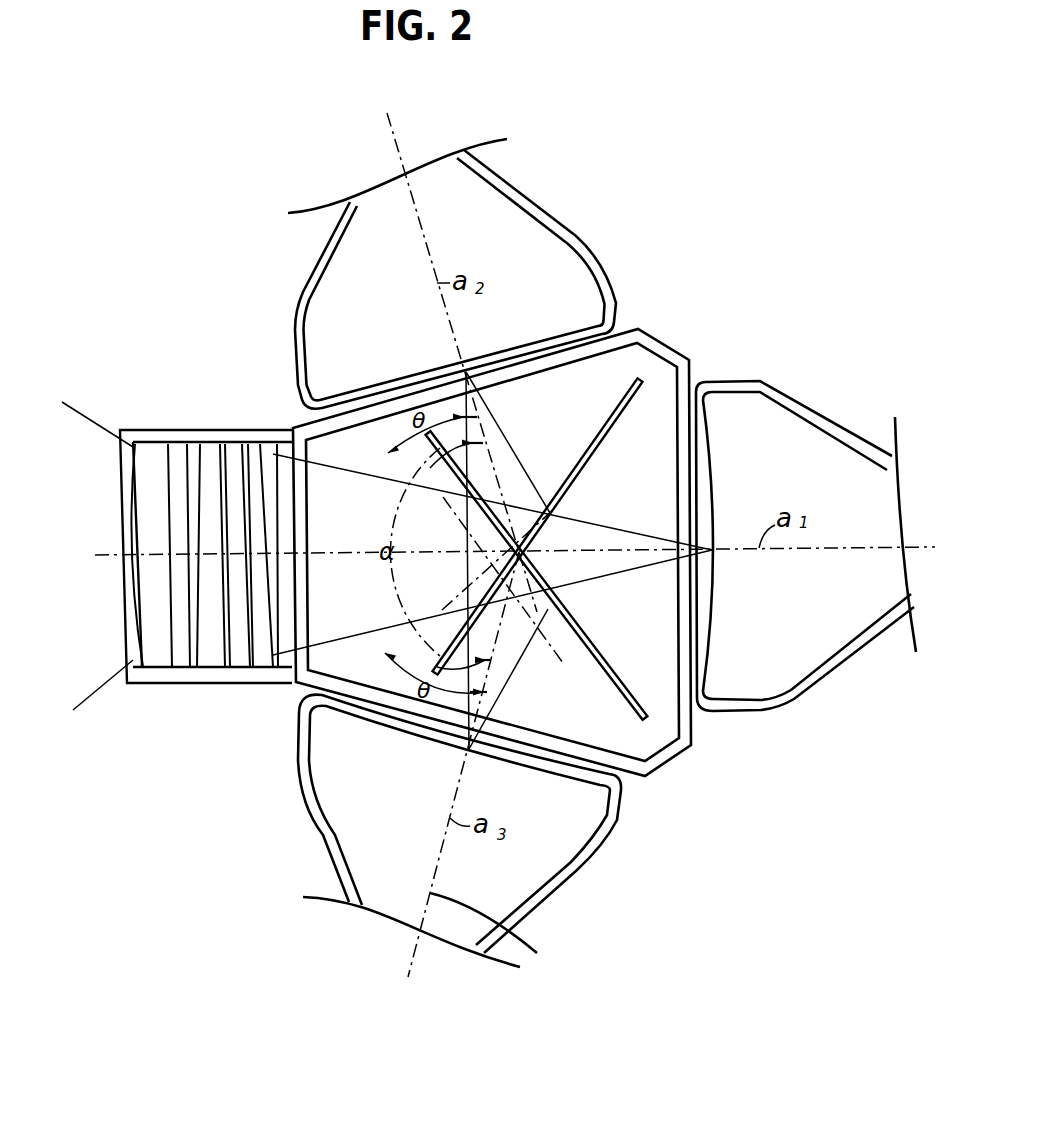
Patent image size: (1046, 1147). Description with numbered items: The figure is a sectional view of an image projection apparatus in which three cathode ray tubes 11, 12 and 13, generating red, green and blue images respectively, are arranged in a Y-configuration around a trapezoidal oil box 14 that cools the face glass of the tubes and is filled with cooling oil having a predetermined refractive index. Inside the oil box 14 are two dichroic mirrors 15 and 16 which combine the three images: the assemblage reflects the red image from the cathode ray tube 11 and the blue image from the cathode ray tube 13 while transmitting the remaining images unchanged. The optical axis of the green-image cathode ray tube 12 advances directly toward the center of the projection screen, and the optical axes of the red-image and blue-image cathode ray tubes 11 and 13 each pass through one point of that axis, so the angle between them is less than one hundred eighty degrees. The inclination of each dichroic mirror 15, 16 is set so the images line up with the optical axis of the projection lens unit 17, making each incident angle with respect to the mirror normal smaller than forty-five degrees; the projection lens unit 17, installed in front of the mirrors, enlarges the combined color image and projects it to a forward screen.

The cathode ray tube 11 is at (293, 305).
The cathode ray tube 12 is at (832, 674).
The cathode ray tube 13 is at (528, 950).
The oil box 14 is at (694, 361).
The dichroic mirror 15 is at (592, 469).
The dichroic mirror 16 is at (606, 650).
The projection lens unit 17 is at (204, 426).